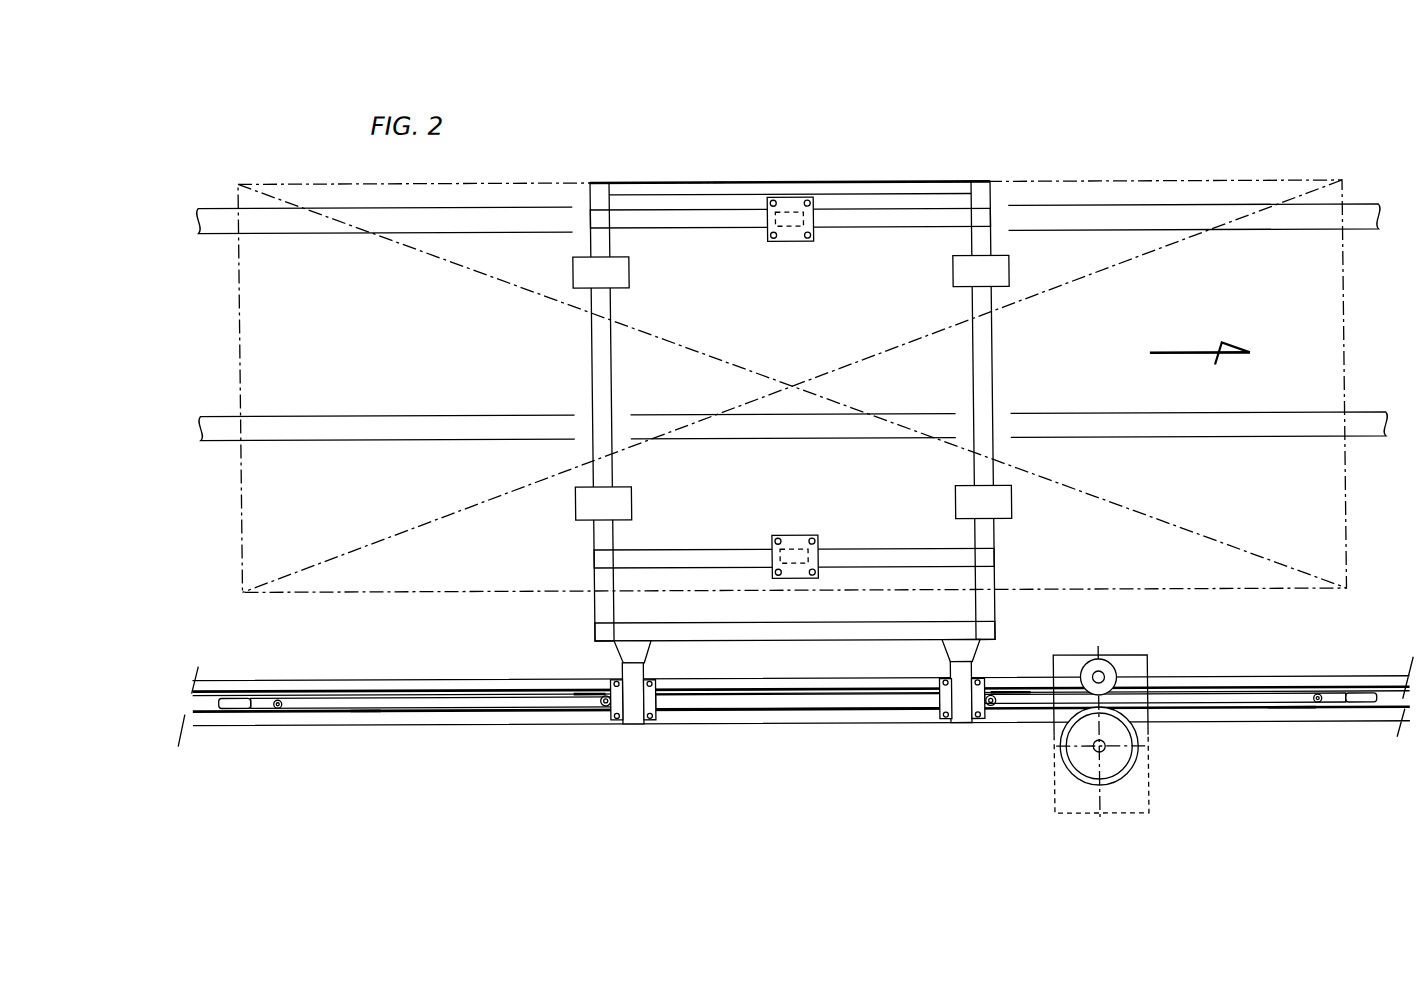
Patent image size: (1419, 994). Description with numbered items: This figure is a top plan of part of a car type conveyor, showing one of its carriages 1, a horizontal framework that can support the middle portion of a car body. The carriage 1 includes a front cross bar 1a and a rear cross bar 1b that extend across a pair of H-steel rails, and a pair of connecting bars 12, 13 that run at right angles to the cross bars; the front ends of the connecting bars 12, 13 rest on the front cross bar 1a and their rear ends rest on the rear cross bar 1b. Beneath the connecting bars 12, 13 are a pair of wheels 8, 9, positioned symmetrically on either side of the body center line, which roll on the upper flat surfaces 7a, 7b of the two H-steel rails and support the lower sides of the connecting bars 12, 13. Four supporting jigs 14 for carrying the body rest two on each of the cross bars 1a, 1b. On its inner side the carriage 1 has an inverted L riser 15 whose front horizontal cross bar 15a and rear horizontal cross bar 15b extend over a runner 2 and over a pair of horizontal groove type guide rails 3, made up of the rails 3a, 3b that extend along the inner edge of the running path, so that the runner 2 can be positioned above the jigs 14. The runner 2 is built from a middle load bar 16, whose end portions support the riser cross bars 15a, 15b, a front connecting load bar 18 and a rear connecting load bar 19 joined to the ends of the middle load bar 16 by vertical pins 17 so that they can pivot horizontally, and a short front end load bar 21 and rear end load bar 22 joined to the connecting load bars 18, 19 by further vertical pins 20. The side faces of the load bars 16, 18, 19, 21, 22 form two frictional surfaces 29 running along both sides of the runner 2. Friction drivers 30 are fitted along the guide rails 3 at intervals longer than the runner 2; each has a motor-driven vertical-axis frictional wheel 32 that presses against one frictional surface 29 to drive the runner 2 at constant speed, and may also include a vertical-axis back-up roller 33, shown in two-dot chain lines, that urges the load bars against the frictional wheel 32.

The carriage 1 is at (794, 365).
The front cross bar 1a is at (990, 374).
The rear cross bar 1b is at (590, 372).
The runner 2 is at (762, 714).
The guide rails 3 is at (525, 731).
The guide rail 3a is at (460, 721).
The guide rail 3b is at (438, 688).
The upper flat surface 7a is at (1216, 424).
The upper flat surface 7b is at (1142, 215).
The wheel 8 is at (786, 556).
The wheel 9 is at (790, 216).
The connecting bar 12 is at (842, 556).
The connecting bar 13 is at (843, 229).
The supporting jigs 14 is at (620, 275).
The inverted L riser 15 is at (817, 710).
The front horizontal cross bar 15a is at (956, 712).
The rear horizontal cross bar 15b is at (625, 712).
The middle load bar 16 is at (810, 702).
The vertical pins 17 is at (567, 696).
The front connecting load bar 18 is at (1211, 705).
The rear connecting load bar 19 is at (398, 707).
The vertical pins 20 is at (275, 707).
The front end load bar 21 is at (1339, 705).
The rear end load bar 22 is at (230, 707).
The frictional surfaces 29 is at (347, 637).
The friction driver 30 is at (1149, 755).
The frictional wheel 32 is at (1122, 774).
The back-up roller 33 is at (1103, 672).